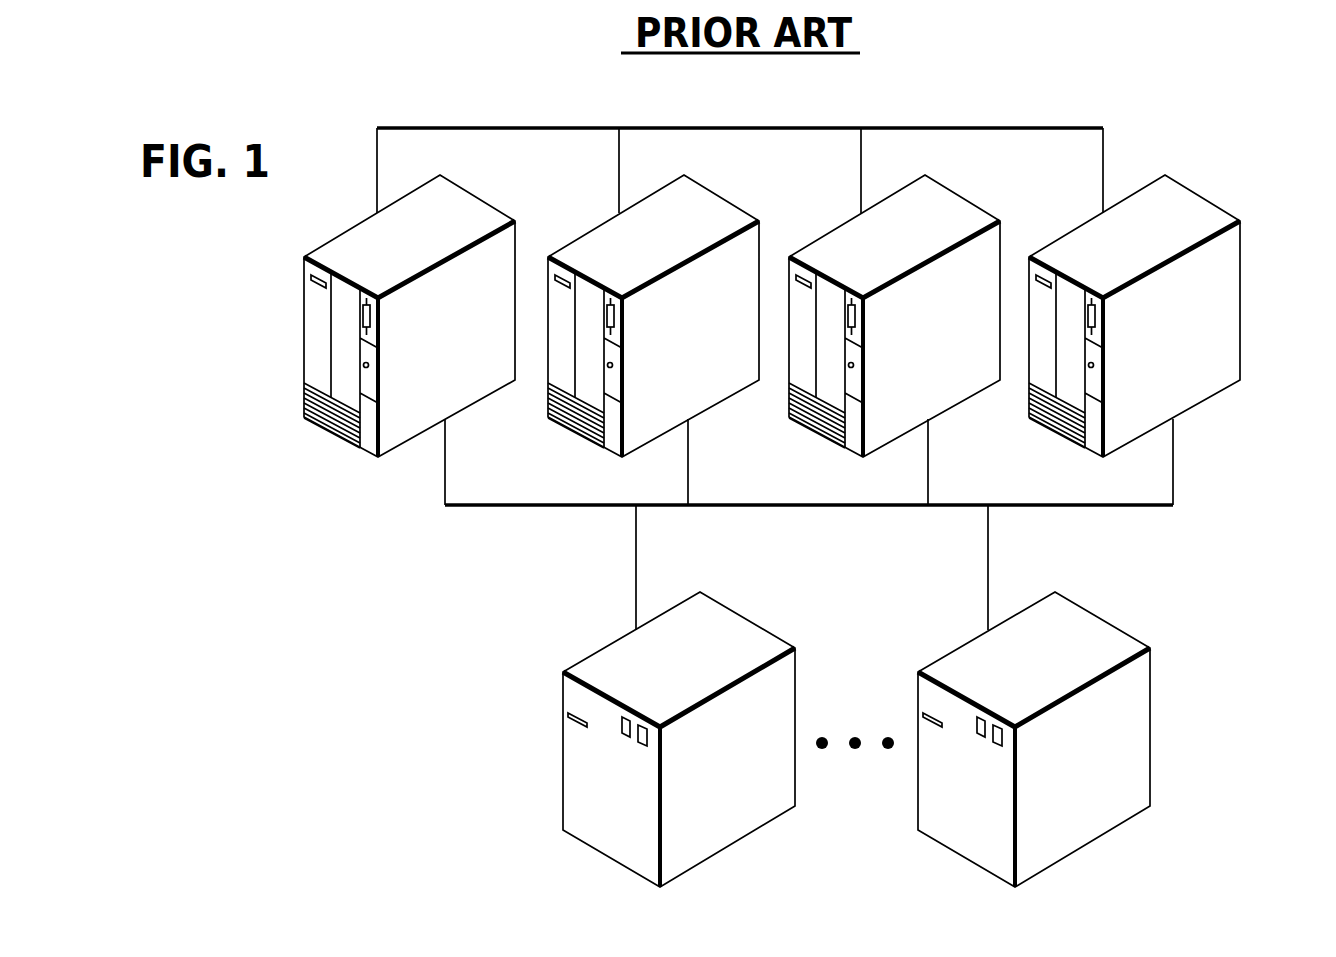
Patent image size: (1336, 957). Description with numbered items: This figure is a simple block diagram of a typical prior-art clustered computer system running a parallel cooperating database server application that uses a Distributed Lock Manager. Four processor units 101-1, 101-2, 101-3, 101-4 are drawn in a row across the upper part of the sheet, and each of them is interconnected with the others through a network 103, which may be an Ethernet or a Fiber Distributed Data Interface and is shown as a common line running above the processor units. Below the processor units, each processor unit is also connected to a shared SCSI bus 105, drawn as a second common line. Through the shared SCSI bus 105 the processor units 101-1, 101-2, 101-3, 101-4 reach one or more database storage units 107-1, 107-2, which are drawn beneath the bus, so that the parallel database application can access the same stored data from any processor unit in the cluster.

The processor unit 101-1 is at (474, 196).
The processor unit 101-2 is at (719, 196).
The processor unit 101-3 is at (957, 196).
The processor unit 101-4 is at (1209, 196).
The network 103 is at (1070, 126).
The shared SCSI bus 105 is at (1152, 507).
The database storage unit 107-1 is at (747, 623).
The database storage unit 107-2 is at (1102, 623).